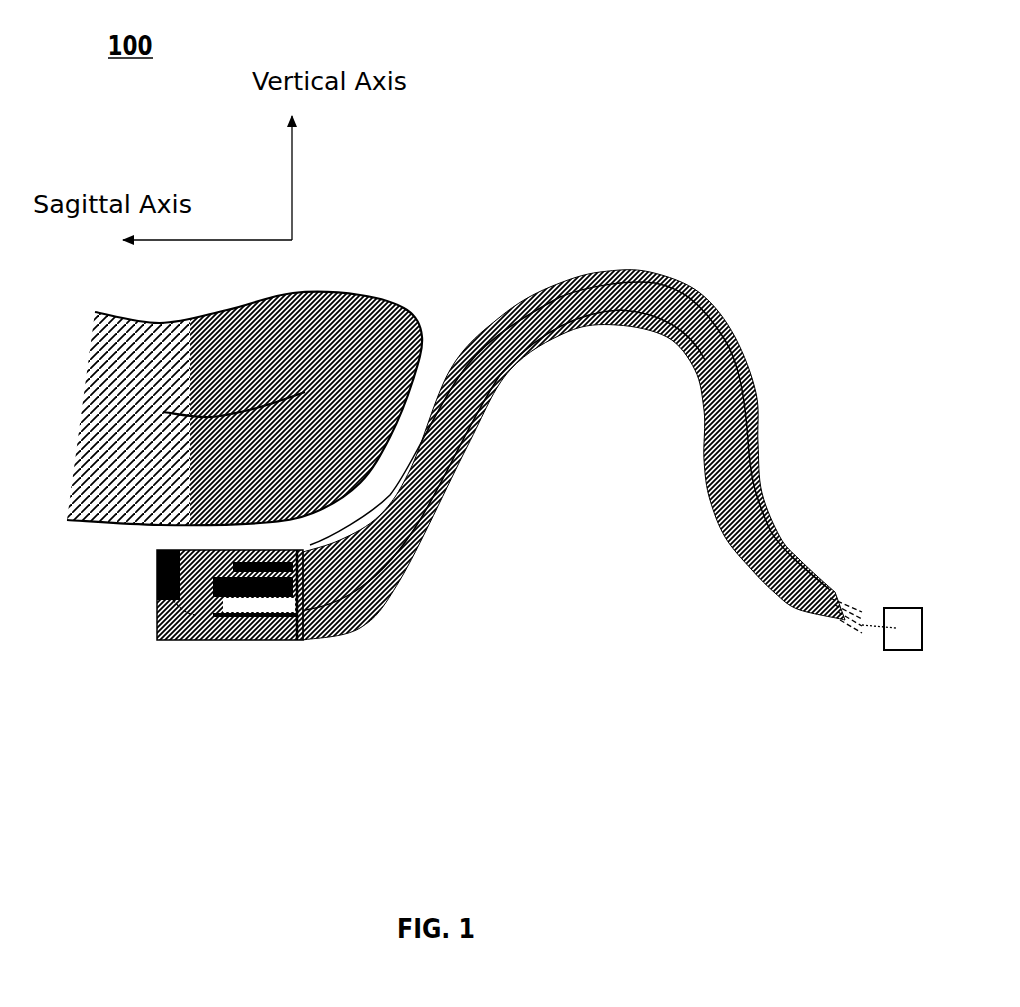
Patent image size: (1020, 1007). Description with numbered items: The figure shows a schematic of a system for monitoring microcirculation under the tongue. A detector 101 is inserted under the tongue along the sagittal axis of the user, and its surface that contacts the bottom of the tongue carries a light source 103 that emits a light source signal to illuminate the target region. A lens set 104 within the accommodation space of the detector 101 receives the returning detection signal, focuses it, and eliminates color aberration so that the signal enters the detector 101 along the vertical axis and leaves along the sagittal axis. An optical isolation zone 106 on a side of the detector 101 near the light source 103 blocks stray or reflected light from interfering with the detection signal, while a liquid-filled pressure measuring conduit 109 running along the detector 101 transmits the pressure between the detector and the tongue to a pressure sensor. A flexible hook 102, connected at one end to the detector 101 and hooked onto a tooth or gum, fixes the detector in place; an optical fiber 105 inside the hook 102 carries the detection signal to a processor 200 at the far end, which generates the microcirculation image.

The detector 101 is at (231, 645).
The hook 102 is at (628, 269).
The light source 103 is at (166, 553).
The lens set 104 is at (204, 585).
The optical fiber 105 is at (439, 510).
The optical isolation zone 106 is at (265, 577).
The pressure measuring conduit 109 is at (164, 609).
The processor 200 is at (882, 652).